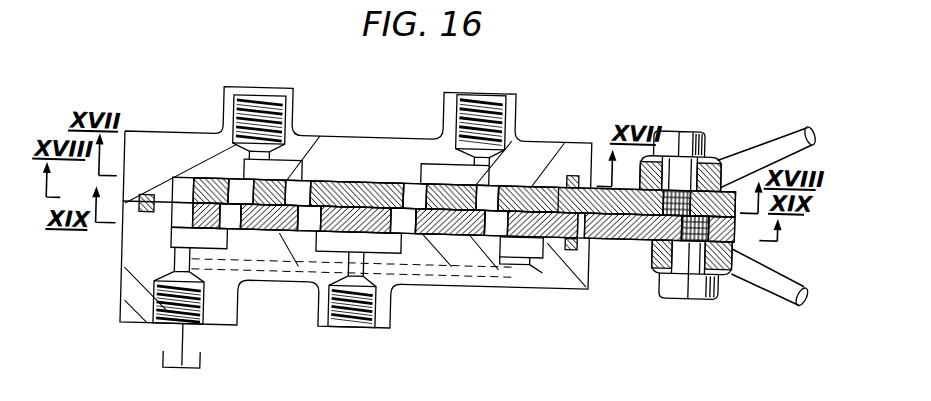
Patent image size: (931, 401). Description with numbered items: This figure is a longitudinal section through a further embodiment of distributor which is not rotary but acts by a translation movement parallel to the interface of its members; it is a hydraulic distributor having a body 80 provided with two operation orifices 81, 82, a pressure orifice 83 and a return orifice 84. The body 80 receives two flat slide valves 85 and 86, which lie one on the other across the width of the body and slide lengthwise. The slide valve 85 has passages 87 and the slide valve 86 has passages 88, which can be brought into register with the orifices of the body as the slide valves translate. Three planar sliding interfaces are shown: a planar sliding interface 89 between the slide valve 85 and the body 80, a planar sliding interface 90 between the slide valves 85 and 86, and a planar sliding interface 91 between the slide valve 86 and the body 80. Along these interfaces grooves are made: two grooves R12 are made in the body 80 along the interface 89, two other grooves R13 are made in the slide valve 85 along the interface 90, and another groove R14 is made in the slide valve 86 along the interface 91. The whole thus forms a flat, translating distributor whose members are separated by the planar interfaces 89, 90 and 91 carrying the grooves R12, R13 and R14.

The body 80 is at (334, 150).
The operation orifice 81 is at (491, 98).
The operation orifice 82 is at (247, 103).
The pressure orifice 83 is at (378, 313).
The return orifice 84 is at (204, 318).
The flat slide valve 85 is at (614, 190).
The flat slide valve 86 is at (645, 212).
The passages 87 is at (247, 178).
The passages 88 is at (235, 228).
The planar sliding interface 89 is at (579, 163).
The planar sliding interface 90 is at (584, 216).
The planar sliding interface 91 is at (549, 228).
The grooves R12 is at (559, 128).
The grooves R13 is at (376, 200).
The groove R14 is at (282, 236).